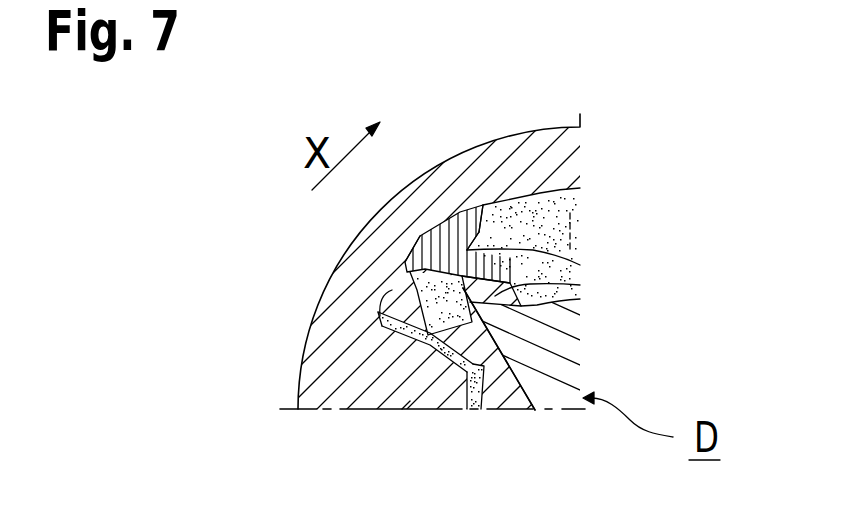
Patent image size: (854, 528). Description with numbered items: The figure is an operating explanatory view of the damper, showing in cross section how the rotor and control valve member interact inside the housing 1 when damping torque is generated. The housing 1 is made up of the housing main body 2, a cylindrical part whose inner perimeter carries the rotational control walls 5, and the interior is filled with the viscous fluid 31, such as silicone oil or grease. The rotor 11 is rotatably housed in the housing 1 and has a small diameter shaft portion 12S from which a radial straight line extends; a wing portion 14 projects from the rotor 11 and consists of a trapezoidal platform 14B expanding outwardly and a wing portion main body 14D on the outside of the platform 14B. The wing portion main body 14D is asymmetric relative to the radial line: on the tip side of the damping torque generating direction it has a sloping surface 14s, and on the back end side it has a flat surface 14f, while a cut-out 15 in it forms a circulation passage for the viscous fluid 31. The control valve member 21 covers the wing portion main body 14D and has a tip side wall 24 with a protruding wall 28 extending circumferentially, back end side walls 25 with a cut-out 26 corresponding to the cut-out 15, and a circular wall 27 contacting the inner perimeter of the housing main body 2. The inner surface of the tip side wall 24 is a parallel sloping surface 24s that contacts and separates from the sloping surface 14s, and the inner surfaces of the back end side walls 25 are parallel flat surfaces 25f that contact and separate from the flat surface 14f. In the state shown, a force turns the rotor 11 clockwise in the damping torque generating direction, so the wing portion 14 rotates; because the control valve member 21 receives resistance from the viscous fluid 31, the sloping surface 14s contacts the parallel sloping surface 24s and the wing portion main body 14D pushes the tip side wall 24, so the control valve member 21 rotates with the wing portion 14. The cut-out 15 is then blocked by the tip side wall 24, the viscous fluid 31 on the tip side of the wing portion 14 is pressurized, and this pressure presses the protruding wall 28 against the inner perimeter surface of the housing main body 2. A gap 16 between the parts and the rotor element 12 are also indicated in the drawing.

The housing main body 2 is at (520, 260).
The housing 1 is at (574, 152).
The viscous fluid 31 is at (560, 212).
The tip side wall 24 is at (560, 262).
The platform 14B is at (562, 290).
The small diameter shaft portion 12S is at (621, 334).
The rotor 11 is at (621, 334).
The slinger 12 is at (556, 360).
The wing portion 14 is at (331, 260).
The wing portion main body 14D is at (331, 260).
The cut-out 15 is at (402, 292).
The protruding wall 28 is at (480, 240).
The control valve member 21 is at (475, 236).
The circular wall 27 is at (418, 268).
The flat surface 14f is at (385, 291).
The parallel flat surface 25f is at (395, 316).
The back end side wall 25 is at (384, 392).
The cut-out 26 is at (387, 380).
The gap 16 is at (470, 411).
The rotational control wall 5 is at (418, 388).
The sloping surface 14s is at (556, 392).
The parallel sloping surface 24s is at (534, 411).